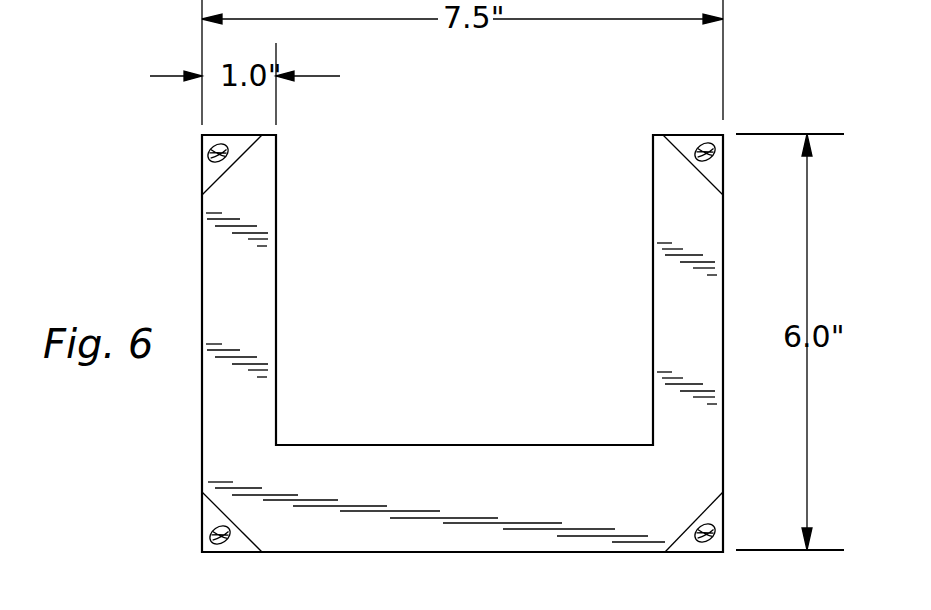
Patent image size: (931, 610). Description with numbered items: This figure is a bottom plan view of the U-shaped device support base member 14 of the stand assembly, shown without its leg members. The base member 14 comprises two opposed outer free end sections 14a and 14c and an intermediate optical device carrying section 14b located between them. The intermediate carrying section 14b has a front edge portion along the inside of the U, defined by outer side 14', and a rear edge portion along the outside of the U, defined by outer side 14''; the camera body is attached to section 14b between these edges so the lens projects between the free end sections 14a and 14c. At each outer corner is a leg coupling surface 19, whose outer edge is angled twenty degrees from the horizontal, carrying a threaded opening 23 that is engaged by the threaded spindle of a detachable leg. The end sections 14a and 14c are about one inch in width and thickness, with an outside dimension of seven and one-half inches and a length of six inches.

The device support base member 14 is at (497, 343).
The outer free end section 14a is at (678, 269).
The intermediate optical device carrying section 14b is at (466, 457).
The outer free end section 14c is at (262, 327).
The outer side 14' is at (370, 417).
The outer side 14'' is at (410, 575).
The outer corner leg coupling surface 19 is at (716, 172).
The threaded opening 23 is at (212, 148).